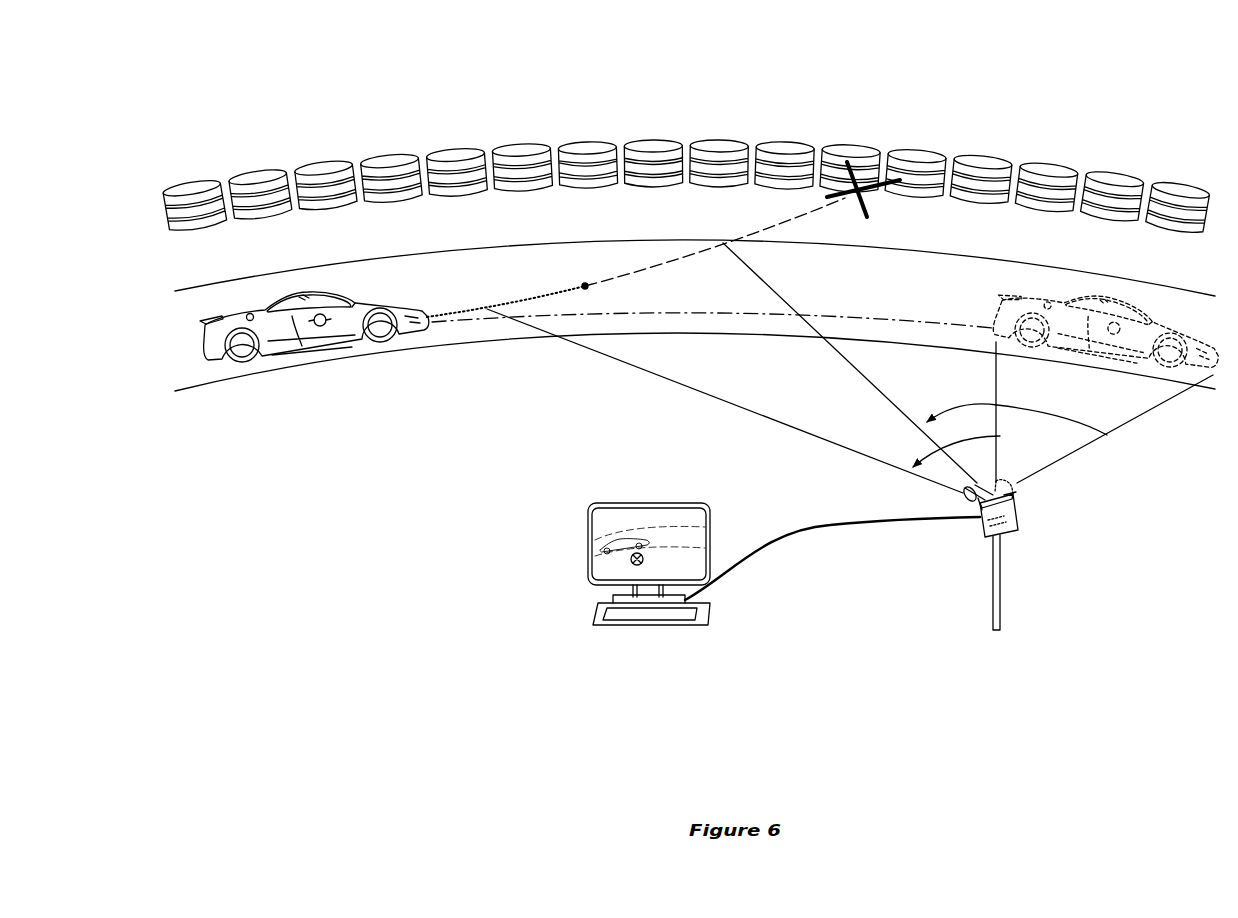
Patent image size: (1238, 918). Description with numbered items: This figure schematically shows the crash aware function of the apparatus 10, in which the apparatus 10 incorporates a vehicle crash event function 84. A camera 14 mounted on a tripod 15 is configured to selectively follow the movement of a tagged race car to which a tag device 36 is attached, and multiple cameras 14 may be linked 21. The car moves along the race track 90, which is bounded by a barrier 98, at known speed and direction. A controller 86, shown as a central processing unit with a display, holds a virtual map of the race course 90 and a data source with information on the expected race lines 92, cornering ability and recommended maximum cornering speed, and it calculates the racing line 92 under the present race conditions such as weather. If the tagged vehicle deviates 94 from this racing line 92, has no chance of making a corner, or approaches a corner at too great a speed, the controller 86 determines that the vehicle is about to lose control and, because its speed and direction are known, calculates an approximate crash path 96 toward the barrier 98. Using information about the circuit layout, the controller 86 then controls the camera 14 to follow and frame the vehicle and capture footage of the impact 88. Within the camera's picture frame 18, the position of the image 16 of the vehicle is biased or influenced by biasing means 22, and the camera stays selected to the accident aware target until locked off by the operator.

The apparatus 10 is at (402, 670).
The camera 14 is at (1015, 527).
The tripod 15 is at (993, 603).
The image 16 is at (600, 546).
The picture frame 18 is at (618, 508).
The link 21 is at (822, 530).
The biasing means 22 is at (650, 557).
The tag device 36 is at (322, 327).
The vehicle crash event function 84 is at (962, 105).
The controller 86 is at (612, 640).
The crash event 88 is at (872, 207).
The race course 90 is at (436, 351).
The race line 92 is at (780, 318).
The deviation 94 is at (538, 295).
The crash path 96 is at (650, 268).
The barrier 98 is at (522, 142).